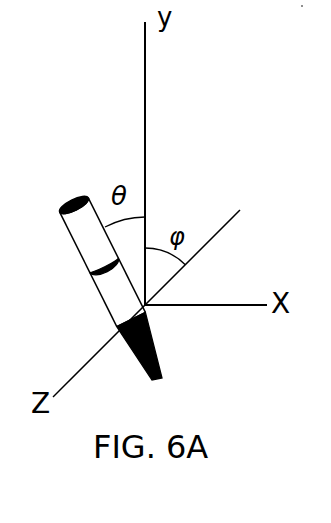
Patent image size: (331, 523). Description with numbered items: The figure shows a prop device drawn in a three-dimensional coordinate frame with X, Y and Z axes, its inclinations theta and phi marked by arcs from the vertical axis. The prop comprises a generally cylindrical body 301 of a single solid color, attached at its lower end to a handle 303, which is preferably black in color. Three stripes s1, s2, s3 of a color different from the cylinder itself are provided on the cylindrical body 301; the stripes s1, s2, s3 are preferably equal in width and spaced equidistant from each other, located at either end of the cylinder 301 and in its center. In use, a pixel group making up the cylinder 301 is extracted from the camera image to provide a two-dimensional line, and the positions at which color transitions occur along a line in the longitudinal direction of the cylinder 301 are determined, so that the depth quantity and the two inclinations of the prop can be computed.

The cylindrical body 301 is at (81, 262).
The handle 303 is at (163, 368).
The first stripe s1 is at (63, 214).
The second stripe s2 is at (92, 276).
The third stripe s3 is at (116, 327).